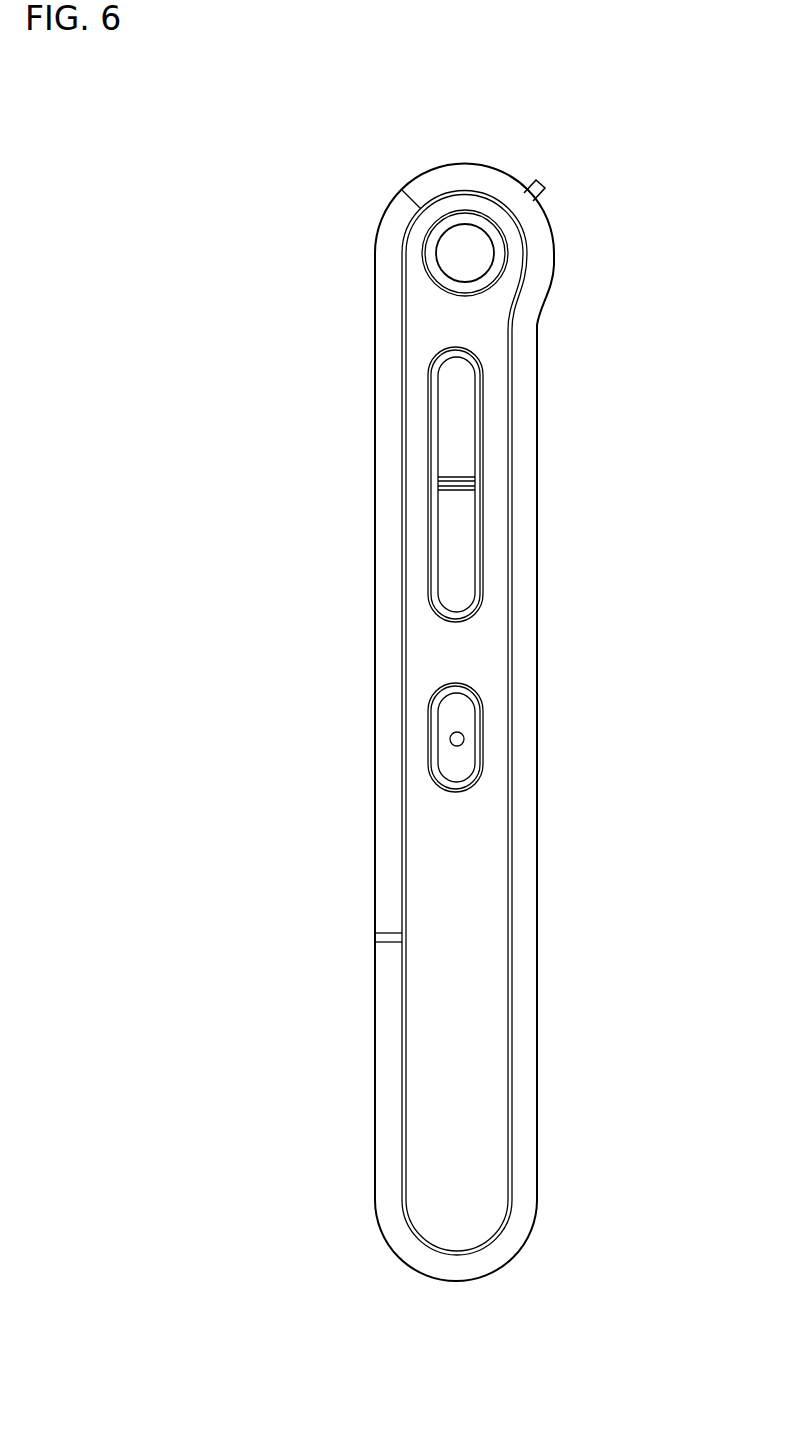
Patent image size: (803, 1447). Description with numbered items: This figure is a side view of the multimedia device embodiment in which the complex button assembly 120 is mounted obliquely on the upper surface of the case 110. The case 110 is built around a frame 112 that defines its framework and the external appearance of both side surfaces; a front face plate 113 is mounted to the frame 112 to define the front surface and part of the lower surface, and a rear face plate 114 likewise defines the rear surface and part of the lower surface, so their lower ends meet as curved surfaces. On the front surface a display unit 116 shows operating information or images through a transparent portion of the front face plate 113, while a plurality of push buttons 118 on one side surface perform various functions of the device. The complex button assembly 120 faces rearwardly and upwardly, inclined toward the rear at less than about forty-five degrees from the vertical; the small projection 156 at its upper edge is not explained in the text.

The case 110 is at (318, 800).
The frame 112 is at (455, 1222).
The front face plate 113 is at (375, 1058).
The rear face plate 114 is at (527, 1010).
The display unit 116 is at (375, 612).
The push buttons 118 is at (470, 744).
The complex button assembly 120 is at (586, 237).
The protrusion 156 is at (541, 180).